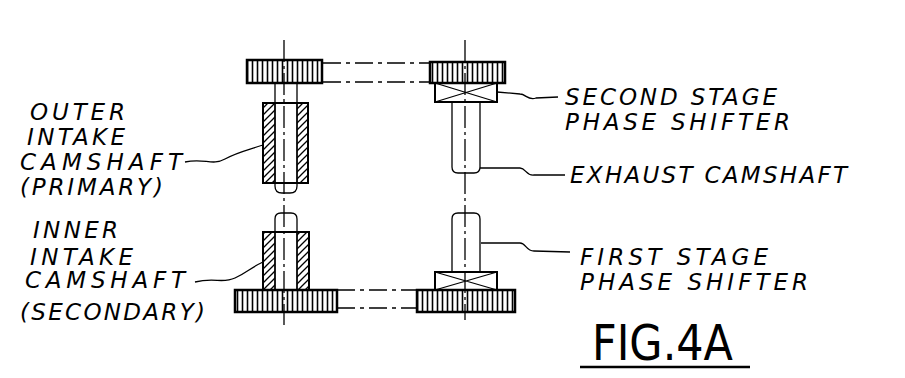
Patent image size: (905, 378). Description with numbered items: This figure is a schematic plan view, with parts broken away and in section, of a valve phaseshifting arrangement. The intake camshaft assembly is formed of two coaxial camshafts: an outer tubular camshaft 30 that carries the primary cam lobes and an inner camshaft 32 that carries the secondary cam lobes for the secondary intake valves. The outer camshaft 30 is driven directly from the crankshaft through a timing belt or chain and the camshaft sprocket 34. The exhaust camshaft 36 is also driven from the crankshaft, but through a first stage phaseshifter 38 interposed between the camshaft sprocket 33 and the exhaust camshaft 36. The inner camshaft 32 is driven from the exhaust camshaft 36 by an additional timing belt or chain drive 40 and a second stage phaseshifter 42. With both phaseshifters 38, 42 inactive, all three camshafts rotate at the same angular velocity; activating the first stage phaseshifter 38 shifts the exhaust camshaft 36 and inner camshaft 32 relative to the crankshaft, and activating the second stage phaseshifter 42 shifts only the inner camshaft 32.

The outer tubular camshaft 30 is at (308, 135).
The inner camshaft 32 is at (297, 226).
The camshaft sprocket 33 is at (475, 313).
The camshaft sprocket 34 is at (315, 313).
The exhaust camshaft 36 is at (452, 232).
The first stage phaseshifter 38 is at (435, 275).
The timing belt or chain drive 40 is at (412, 38).
The second stage phaseshifter 42 is at (497, 90).